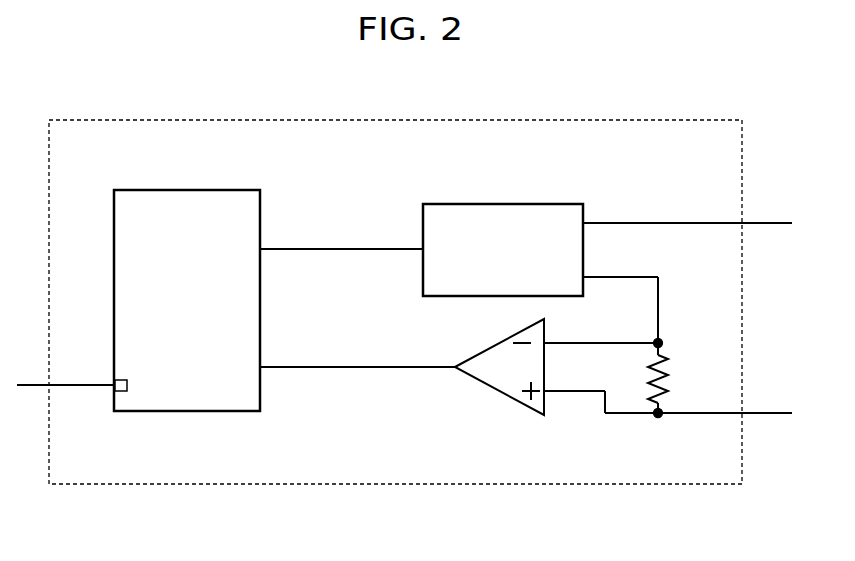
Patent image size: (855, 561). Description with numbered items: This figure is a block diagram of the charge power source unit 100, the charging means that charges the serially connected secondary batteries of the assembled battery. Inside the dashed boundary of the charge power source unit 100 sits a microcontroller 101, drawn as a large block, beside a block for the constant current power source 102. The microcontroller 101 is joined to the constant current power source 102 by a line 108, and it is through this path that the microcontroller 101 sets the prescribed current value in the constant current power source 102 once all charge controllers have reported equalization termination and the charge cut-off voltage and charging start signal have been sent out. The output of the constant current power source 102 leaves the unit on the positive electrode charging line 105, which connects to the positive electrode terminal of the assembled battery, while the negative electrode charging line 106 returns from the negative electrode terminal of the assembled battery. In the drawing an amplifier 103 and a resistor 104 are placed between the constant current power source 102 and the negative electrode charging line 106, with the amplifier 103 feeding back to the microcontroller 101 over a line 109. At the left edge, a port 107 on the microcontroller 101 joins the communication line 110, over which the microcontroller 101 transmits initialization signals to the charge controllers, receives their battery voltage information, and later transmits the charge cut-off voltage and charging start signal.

The charge power source unit 100 is at (628, 120).
The microcontroller 101 is at (186, 190).
The constant current power source 102 is at (505, 204).
The comparator 103 is at (498, 396).
The resistor 104 is at (668, 367).
The positive electrode charging line 105 is at (765, 223).
The negative electrode charging line 106 is at (762, 413).
The input port 107 is at (122, 392).
The control signal line 108 is at (340, 250).
The comparator output line 109 is at (340, 368).
The communication line 110 is at (75, 386).